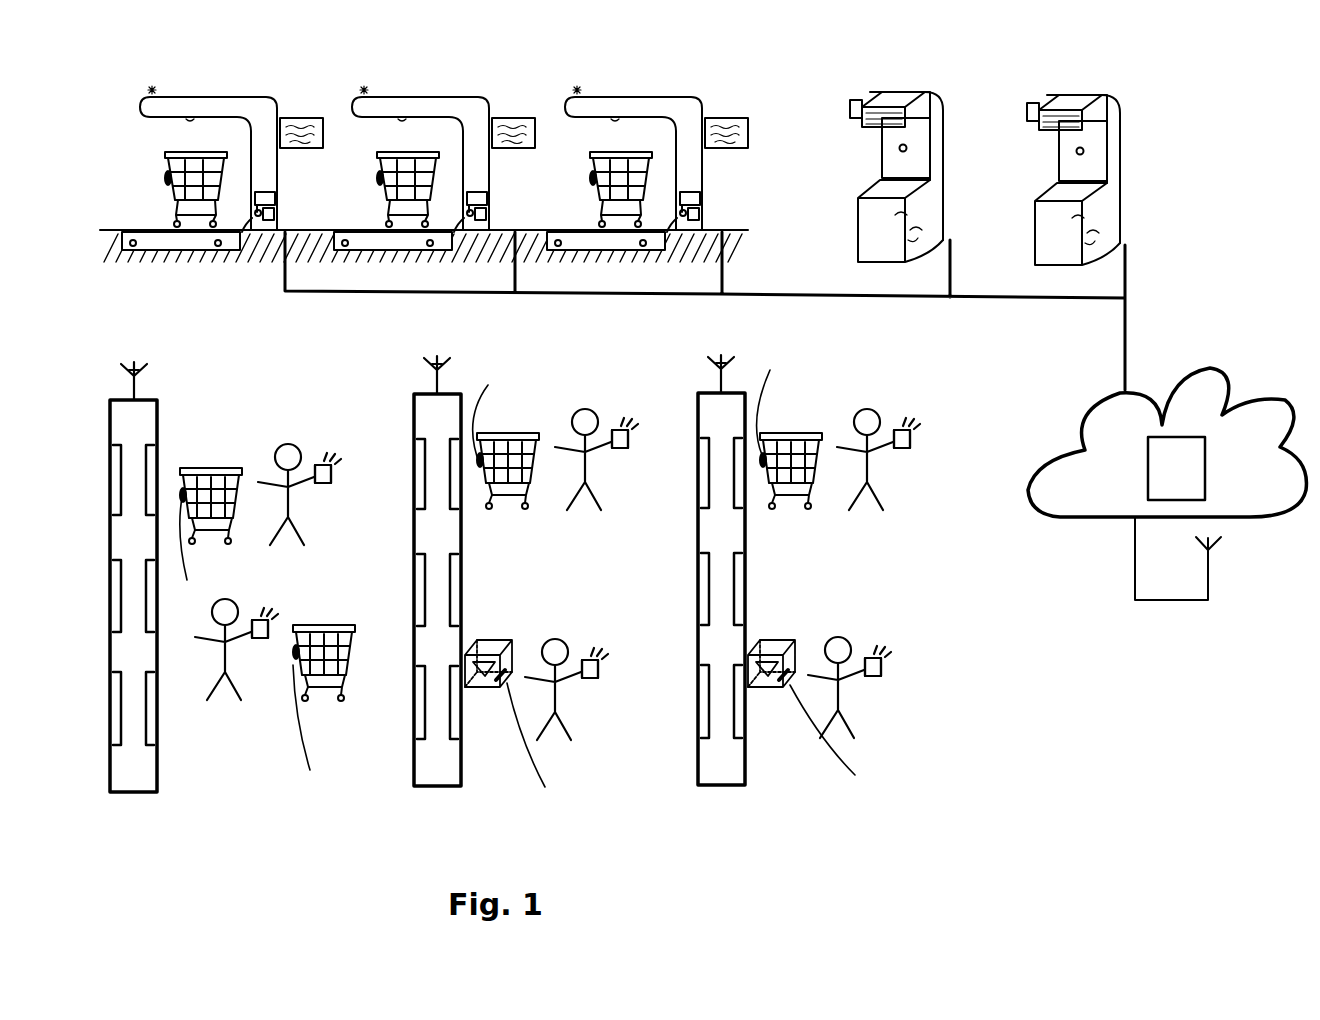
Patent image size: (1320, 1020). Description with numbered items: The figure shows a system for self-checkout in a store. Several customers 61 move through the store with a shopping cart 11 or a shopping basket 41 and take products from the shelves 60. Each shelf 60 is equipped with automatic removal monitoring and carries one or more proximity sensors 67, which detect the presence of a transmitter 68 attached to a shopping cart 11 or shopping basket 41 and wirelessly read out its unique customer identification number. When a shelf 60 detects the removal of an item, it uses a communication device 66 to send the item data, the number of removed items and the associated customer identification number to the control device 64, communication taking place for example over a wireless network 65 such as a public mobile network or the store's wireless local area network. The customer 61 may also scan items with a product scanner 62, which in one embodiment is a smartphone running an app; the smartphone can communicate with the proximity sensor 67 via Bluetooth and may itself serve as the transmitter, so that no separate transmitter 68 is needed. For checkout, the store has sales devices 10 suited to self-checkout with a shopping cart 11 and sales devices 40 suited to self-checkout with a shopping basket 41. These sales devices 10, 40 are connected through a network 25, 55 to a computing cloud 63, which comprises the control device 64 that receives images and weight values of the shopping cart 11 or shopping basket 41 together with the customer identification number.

The sales device 10 is at (233, 78).
The sales device 40 is at (920, 65).
The network 25 is at (705, 311).
The network 55 is at (980, 303).
The computing cloud 63 is at (1204, 364).
The control device 64 is at (1146, 468).
The wireless network 65 is at (1220, 568).
The shelf 60 is at (160, 795).
The proximity sensor 67 is at (110, 477).
The communication device 66 is at (142, 365).
The shopping cart 11 is at (202, 465).
The transmitter 68 is at (531, 581).
The customer 61 is at (296, 438).
The product scanner 62 is at (334, 479).
The shopping basket 41 is at (496, 640).